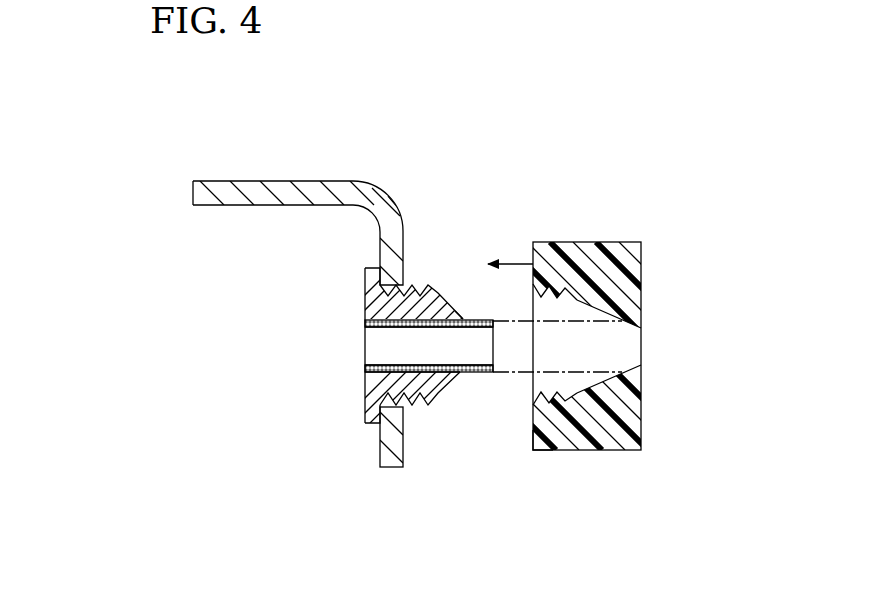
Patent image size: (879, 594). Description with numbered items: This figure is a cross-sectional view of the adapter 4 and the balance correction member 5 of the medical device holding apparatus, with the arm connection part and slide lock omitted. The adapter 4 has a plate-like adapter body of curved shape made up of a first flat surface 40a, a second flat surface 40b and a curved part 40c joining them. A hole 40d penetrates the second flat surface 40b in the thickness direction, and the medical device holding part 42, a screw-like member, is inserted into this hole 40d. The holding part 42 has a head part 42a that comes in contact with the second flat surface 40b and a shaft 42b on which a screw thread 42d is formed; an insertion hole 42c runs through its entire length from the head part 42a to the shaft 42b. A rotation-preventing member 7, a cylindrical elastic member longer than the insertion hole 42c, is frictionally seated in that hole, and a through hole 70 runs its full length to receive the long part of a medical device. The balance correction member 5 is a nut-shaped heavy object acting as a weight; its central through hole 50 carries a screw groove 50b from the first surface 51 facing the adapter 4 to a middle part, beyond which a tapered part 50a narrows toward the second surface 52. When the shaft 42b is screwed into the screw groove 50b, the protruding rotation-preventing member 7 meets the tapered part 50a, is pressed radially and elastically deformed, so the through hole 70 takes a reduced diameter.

The adapter 4 is at (354, 146).
The first flat surface 40a is at (246, 181).
The second flat surface 40b is at (403, 462).
The curved part 40c is at (385, 193).
The hole 40d is at (427, 290).
The medical device holding part 42 is at (360, 403).
The head part 42a is at (365, 290).
The shaft 42b is at (428, 315).
The insertion hole 42c is at (462, 318).
The screw thread 42d is at (410, 397).
The rotation-preventing member 7 is at (484, 375).
The through hole 70 is at (382, 326).
The balance correction member 5 is at (604, 242).
The through hole 50 is at (610, 320).
The tapered part 50a is at (640, 323).
The screw groove 50b is at (556, 292).
The first surface 51 is at (534, 440).
The second surface 52 is at (641, 410).